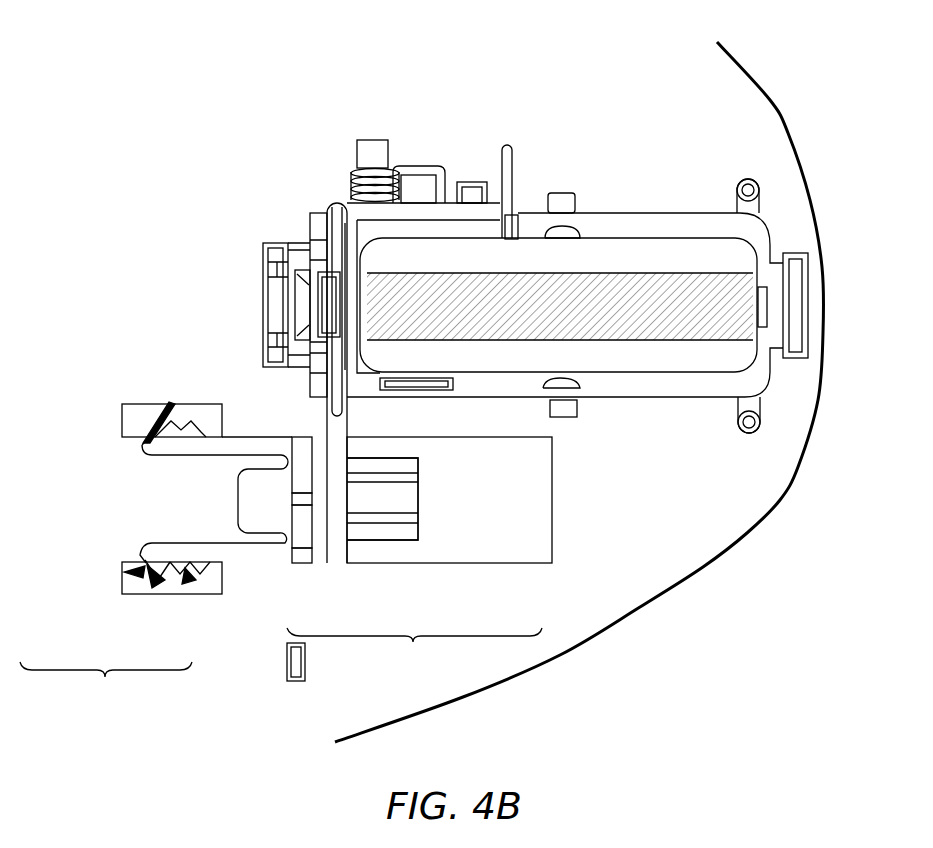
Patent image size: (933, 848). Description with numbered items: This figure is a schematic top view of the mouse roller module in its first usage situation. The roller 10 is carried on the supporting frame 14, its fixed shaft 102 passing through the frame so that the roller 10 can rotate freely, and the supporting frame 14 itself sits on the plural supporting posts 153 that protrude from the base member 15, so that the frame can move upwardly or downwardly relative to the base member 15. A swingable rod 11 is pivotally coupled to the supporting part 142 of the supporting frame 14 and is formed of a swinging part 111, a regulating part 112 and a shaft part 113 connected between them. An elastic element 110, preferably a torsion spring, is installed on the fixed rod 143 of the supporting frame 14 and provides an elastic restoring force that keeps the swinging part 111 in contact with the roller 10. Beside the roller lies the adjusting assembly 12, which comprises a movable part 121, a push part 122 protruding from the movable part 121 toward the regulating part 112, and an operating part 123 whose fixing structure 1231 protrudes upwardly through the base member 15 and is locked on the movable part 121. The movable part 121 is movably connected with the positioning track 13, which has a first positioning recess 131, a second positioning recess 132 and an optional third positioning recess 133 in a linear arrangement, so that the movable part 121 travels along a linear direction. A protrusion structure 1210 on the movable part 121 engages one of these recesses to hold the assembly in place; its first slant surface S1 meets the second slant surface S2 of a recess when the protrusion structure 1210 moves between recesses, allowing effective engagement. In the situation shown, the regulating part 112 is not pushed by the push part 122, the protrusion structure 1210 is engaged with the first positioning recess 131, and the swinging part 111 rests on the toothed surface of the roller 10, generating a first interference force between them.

The roller 10 is at (746, 347).
The swingable rod 11 is at (93, 101).
The swinging part 111 is at (515, 230).
The regulating part 112 is at (340, 447).
The shaft part 113 is at (335, 400).
The adjusting assembly 12 is at (414, 650).
The movable part 121 is at (515, 548).
The push part 122 is at (320, 548).
The operating part 123 is at (382, 499).
The fixing structure 1231 is at (405, 542).
The positioning track 13 is at (130, 425).
The first positioning recess 131 is at (135, 572).
The second positioning recess 132 is at (155, 578).
The third positioning recess 133 is at (188, 578).
The protrusion structure 1210 is at (150, 558).
The supporting frame 14 is at (690, 215).
The supporting part 142 is at (332, 280).
The fixed rod 143 is at (372, 150).
The base member 15 is at (748, 98).
The fixed shaft 102 is at (565, 205).
The elastic element 110 is at (418, 170).
The supporting posts 153 is at (800, 270).
The first slant surface S1 is at (143, 453).
The second slant surface S2 is at (170, 410).